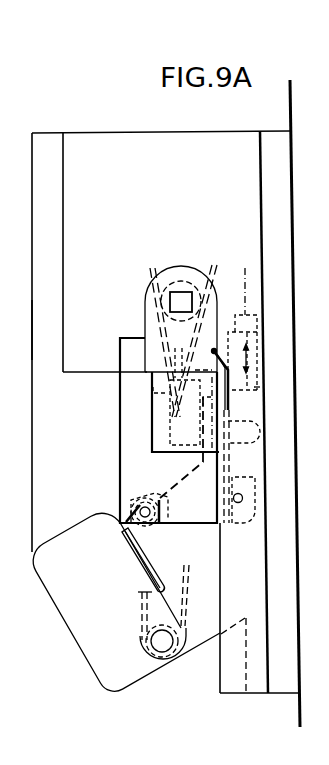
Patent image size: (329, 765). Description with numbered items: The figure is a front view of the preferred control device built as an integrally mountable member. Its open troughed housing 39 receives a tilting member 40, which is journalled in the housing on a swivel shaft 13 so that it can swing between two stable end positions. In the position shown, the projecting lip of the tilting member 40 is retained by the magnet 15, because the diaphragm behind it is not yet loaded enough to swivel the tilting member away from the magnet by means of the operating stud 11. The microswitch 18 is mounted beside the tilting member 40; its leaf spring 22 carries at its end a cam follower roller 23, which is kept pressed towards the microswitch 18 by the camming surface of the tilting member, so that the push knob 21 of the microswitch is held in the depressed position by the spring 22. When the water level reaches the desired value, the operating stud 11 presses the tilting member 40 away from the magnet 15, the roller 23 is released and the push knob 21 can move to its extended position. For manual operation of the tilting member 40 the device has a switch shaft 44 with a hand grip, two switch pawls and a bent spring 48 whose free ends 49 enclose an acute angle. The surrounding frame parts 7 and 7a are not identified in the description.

The frame 7 is at (150, 403).
The frame wall 7a is at (73, 263).
The open troughed housing 39 is at (48, 342).
The tilting member 40 is at (112, 430).
The switch shaft 44 is at (181, 292).
The free ends 49 is at (152, 272).
The magnet 15 is at (240, 385).
The operating stud 11 is at (267, 432).
The swivel shaft 13 is at (240, 497).
The cam follower roller 23 is at (132, 497).
The microswitch 18 is at (58, 594).
The push knob 21 is at (127, 548).
The leaf spring 22 is at (153, 567).
The bent spring 48 is at (186, 566).